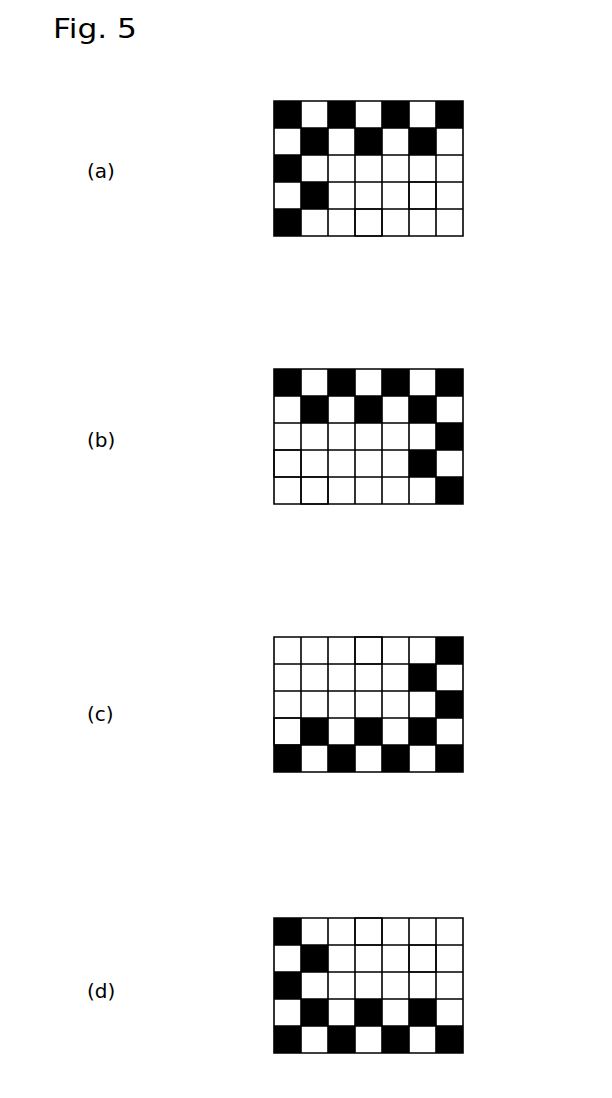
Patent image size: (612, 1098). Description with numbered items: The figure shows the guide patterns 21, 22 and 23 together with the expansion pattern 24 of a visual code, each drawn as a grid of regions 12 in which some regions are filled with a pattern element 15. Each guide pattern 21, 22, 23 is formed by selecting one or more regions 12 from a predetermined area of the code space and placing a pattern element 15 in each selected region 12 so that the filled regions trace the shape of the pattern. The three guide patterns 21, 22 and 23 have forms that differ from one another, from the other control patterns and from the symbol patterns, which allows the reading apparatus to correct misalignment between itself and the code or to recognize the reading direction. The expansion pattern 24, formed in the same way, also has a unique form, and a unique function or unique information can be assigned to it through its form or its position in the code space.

The region 12 is at (428, 198).
The pattern element 15 is at (393, 100).
The guide pattern 21 is at (271, 97).
The guide pattern 22 is at (271, 365).
The guide pattern 23 is at (271, 633).
The expansion pattern 24 is at (271, 911).